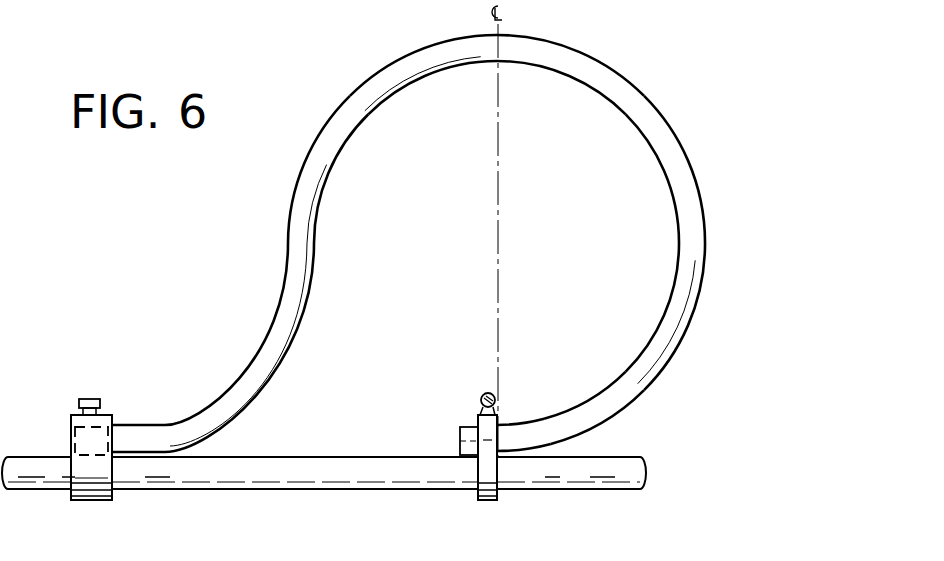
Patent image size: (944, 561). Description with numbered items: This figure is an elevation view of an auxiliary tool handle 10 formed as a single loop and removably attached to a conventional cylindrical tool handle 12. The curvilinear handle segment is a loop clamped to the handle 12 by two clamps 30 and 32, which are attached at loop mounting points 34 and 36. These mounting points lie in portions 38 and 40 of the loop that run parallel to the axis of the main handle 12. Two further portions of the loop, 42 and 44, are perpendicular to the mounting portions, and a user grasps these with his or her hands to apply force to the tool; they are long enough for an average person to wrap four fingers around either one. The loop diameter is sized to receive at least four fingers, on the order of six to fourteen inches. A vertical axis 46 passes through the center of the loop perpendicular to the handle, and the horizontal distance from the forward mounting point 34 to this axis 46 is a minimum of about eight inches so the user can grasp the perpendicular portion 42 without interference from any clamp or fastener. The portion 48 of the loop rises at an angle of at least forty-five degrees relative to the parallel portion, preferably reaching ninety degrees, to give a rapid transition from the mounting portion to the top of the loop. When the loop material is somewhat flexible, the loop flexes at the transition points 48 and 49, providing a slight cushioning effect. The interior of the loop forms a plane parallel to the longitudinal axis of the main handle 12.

The auxiliary tool handle 10 is at (286, 60).
The cylindrical tool handle 12 is at (30, 490).
The clamp 30 is at (77, 411).
The clamp 32 is at (480, 422).
The loop mounting point 34 is at (67, 450).
The loop mounting point 36 is at (463, 437).
The mounting portion 38 is at (117, 425).
The mounting portion 40 is at (503, 423).
The perpendicular loop portion 42 is at (318, 212).
The perpendicular loop portion 44 is at (677, 252).
The axis through the center of the loop 46 is at (501, 19).
The transition portion 48 is at (243, 366).
The transition point 49 is at (633, 407).